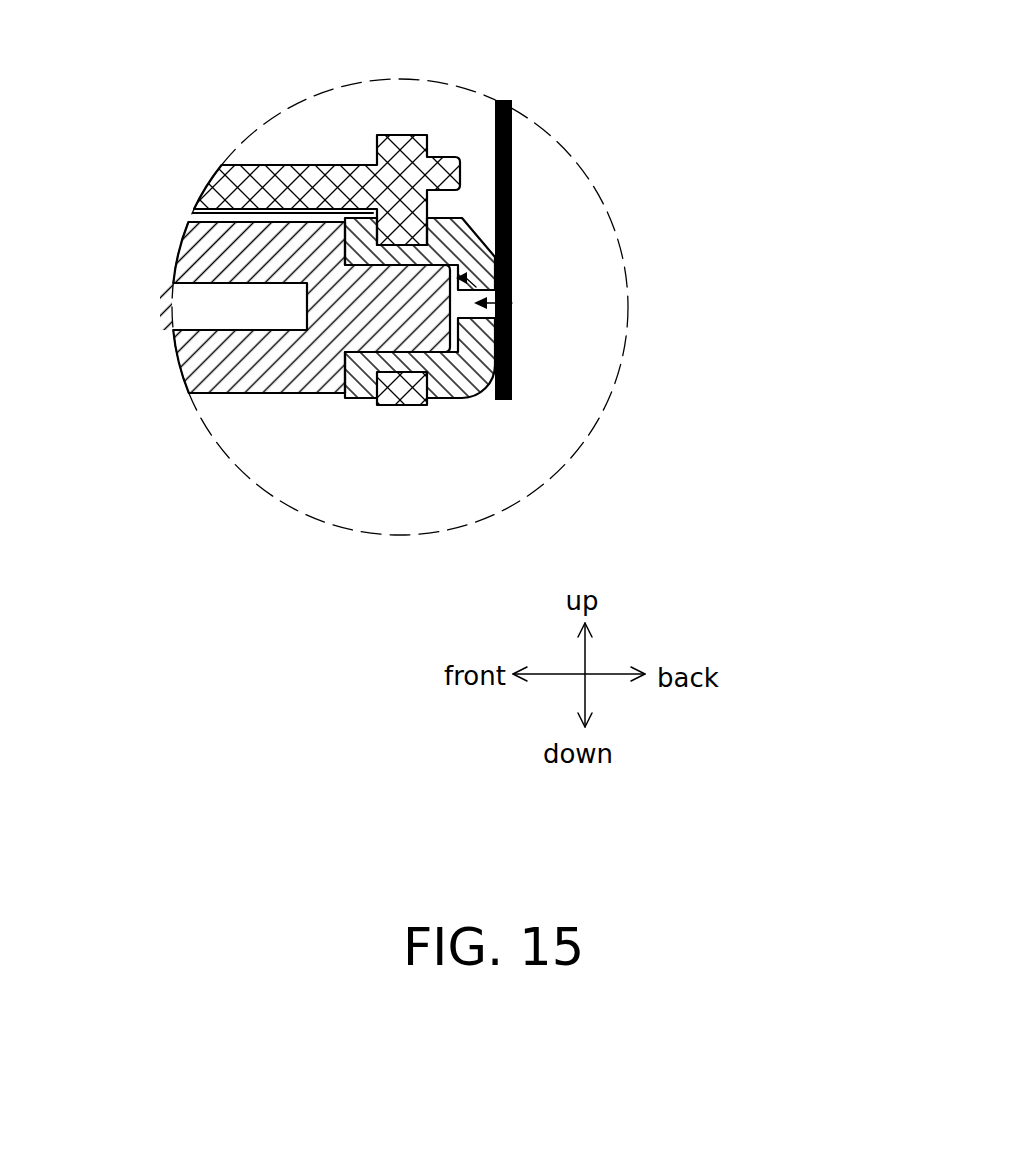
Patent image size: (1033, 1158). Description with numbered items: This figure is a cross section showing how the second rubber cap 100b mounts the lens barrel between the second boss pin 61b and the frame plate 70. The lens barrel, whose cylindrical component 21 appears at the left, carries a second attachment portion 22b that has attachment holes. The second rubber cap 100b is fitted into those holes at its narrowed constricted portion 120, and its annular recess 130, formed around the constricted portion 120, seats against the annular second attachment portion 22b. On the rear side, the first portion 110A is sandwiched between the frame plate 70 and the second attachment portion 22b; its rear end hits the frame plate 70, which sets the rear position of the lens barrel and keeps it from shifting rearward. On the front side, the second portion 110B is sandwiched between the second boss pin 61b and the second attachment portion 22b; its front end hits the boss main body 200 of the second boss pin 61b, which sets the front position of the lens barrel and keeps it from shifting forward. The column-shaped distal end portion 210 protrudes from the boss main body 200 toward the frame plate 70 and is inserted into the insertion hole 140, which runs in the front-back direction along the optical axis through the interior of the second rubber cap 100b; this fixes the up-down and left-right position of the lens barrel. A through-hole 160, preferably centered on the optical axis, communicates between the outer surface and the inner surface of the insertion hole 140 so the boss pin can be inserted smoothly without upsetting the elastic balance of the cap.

The second attachment portion 22b is at (393, 385).
The cylindrical component 21 is at (232, 186).
The frame plate 70 is at (592, 250).
The insertion hole 140 is at (512, 270).
The through-hole 160 is at (512, 302).
The first portion 110A is at (475, 335).
The annular recess 130 is at (413, 365).
The constricted portion 120 is at (407, 392).
The second portion 110B is at (357, 385).
The second rubber cap 100b is at (620, 306).
The boss main body 200 is at (214, 377).
The distal end portion 210 is at (393, 300).
The second boss pin 61b is at (241, 435).